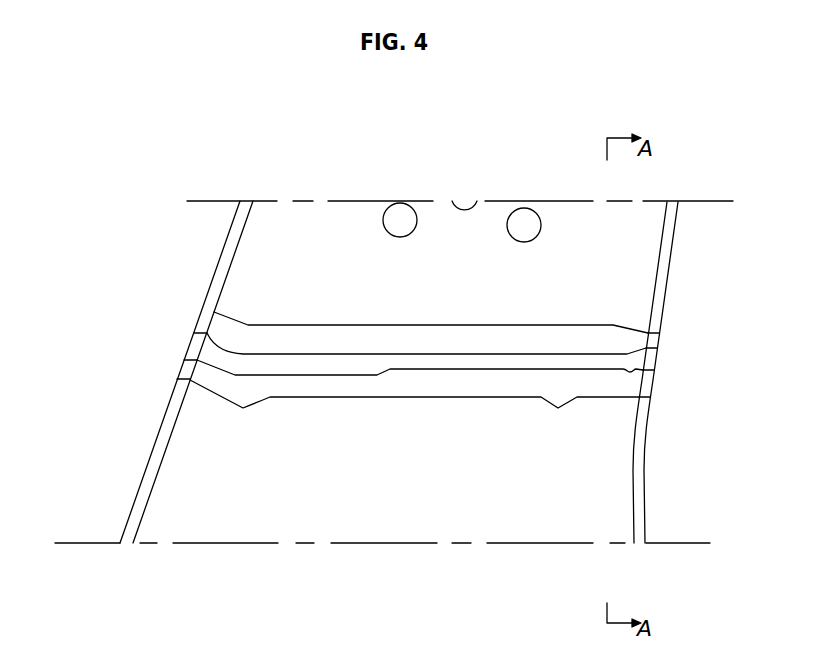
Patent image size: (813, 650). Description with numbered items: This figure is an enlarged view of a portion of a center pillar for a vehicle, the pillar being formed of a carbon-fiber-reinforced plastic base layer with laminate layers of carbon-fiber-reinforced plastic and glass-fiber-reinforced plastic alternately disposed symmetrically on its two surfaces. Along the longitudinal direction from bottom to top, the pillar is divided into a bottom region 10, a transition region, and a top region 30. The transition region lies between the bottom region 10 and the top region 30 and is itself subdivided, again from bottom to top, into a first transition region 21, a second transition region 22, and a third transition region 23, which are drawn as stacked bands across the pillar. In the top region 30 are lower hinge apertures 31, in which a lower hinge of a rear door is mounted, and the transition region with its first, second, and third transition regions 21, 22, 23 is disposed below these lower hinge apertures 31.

The bottom region 10 is at (170, 478).
The top region 30 is at (253, 258).
The lower hinge apertures 31 is at (523, 225).
The third transition region 23 is at (248, 326).
The second transition region 22 is at (235, 376).
The first transition region 21 is at (270, 397).